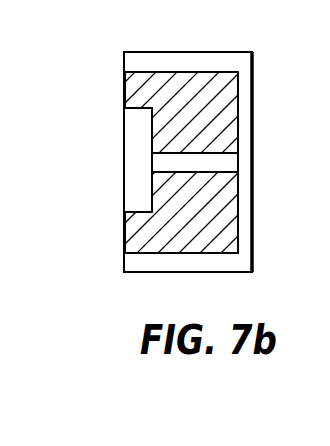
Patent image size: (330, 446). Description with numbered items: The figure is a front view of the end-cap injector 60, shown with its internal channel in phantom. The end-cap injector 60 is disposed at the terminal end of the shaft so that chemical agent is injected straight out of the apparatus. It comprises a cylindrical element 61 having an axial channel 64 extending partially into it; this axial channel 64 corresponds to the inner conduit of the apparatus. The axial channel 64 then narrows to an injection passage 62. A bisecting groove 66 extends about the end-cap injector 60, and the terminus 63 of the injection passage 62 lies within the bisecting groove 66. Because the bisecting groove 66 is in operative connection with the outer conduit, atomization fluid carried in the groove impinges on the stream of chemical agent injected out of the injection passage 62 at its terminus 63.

The end-cap injector 60 is at (106, 59).
The cylindrical element 61 is at (126, 230).
The injection passage 62 is at (215, 162).
The terminus 63 is at (252, 155).
The axial channel 64 is at (133, 121).
The bisecting groove 66 is at (204, 58).